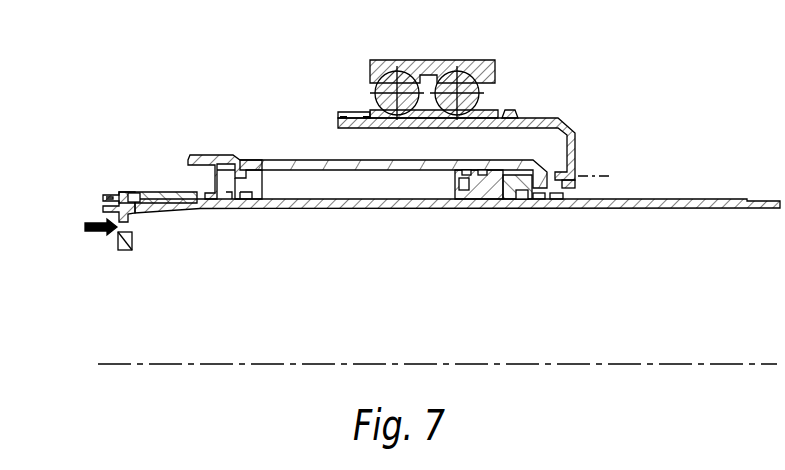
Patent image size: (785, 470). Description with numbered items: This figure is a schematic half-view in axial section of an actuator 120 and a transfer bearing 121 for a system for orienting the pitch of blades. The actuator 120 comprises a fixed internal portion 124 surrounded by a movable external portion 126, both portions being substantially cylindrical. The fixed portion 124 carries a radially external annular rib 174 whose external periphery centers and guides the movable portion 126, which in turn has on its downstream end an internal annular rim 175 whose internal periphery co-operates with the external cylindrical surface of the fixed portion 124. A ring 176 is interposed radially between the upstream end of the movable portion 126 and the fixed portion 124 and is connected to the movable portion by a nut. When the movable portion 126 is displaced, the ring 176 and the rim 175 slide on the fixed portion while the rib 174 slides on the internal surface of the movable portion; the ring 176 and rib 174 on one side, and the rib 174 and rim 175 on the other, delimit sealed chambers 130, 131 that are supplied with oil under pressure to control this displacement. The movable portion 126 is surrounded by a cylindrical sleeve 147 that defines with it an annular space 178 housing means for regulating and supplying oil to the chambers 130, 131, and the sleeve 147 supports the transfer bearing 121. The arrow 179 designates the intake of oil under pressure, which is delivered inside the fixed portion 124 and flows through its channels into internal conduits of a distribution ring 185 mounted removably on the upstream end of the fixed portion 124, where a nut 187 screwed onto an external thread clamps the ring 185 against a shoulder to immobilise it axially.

The actuator 120 is at (585, 150).
The transfer bearing 121 is at (370, 102).
The fixed internal portion 124 is at (360, 210).
The movable external portion 126 is at (345, 172).
The sealed chamber 130 is at (428, 181).
The sealed chamber 131 is at (530, 190).
The cylindrical sleeve 147 is at (382, 130).
The radially external annular rib 174 is at (476, 188).
The internal annular rim 175 is at (545, 183).
The ring 176 is at (225, 161).
The annular space 178 is at (451, 142).
The arrow 179 is at (95, 230).
The distribution ring 185 is at (165, 197).
The nut 187 is at (115, 197).